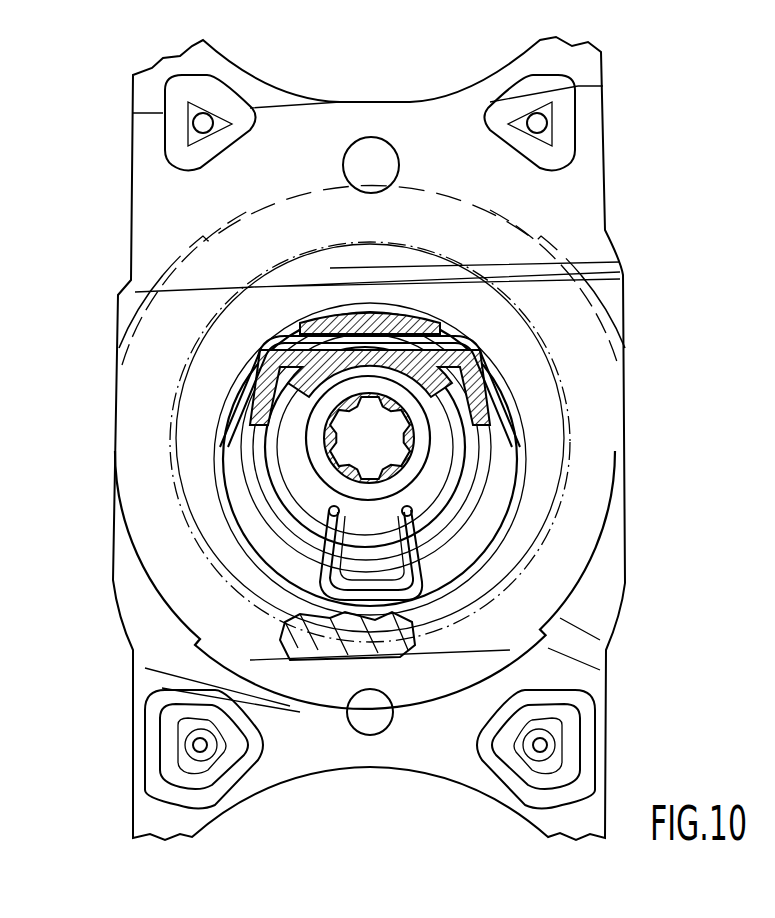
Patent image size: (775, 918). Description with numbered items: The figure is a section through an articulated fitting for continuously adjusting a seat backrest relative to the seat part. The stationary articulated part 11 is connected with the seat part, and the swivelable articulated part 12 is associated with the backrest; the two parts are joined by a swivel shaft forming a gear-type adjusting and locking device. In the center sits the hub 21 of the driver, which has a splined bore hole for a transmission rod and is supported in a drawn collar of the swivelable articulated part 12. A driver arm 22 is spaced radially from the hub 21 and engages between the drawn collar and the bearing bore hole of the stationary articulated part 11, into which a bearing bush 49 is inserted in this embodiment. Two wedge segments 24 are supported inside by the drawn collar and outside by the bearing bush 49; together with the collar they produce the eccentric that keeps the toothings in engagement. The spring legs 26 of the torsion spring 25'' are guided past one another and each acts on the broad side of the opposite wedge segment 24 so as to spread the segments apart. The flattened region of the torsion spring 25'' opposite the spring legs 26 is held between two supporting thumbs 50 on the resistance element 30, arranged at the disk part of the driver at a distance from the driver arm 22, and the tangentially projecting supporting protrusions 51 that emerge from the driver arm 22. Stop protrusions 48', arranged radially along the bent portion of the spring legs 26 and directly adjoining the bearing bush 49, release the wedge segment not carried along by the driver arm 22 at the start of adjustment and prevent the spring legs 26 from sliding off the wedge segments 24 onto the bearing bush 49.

The stationary articulated part 11 is at (304, 157).
The swivelable articulated part 12 is at (312, 769).
The hub 21 is at (258, 392).
The driver arm 22 is at (490, 385).
The wedge segments 24 is at (322, 512).
The torsion spring 25'' is at (453, 459).
The spring legs 26 is at (322, 566).
The resistance element 30 is at (364, 305).
The stop protrusions 48' is at (237, 585).
The bearing bush 49 is at (467, 445).
The supporting thumbs 50 is at (312, 322).
The supporting protrusions 51 is at (258, 362).